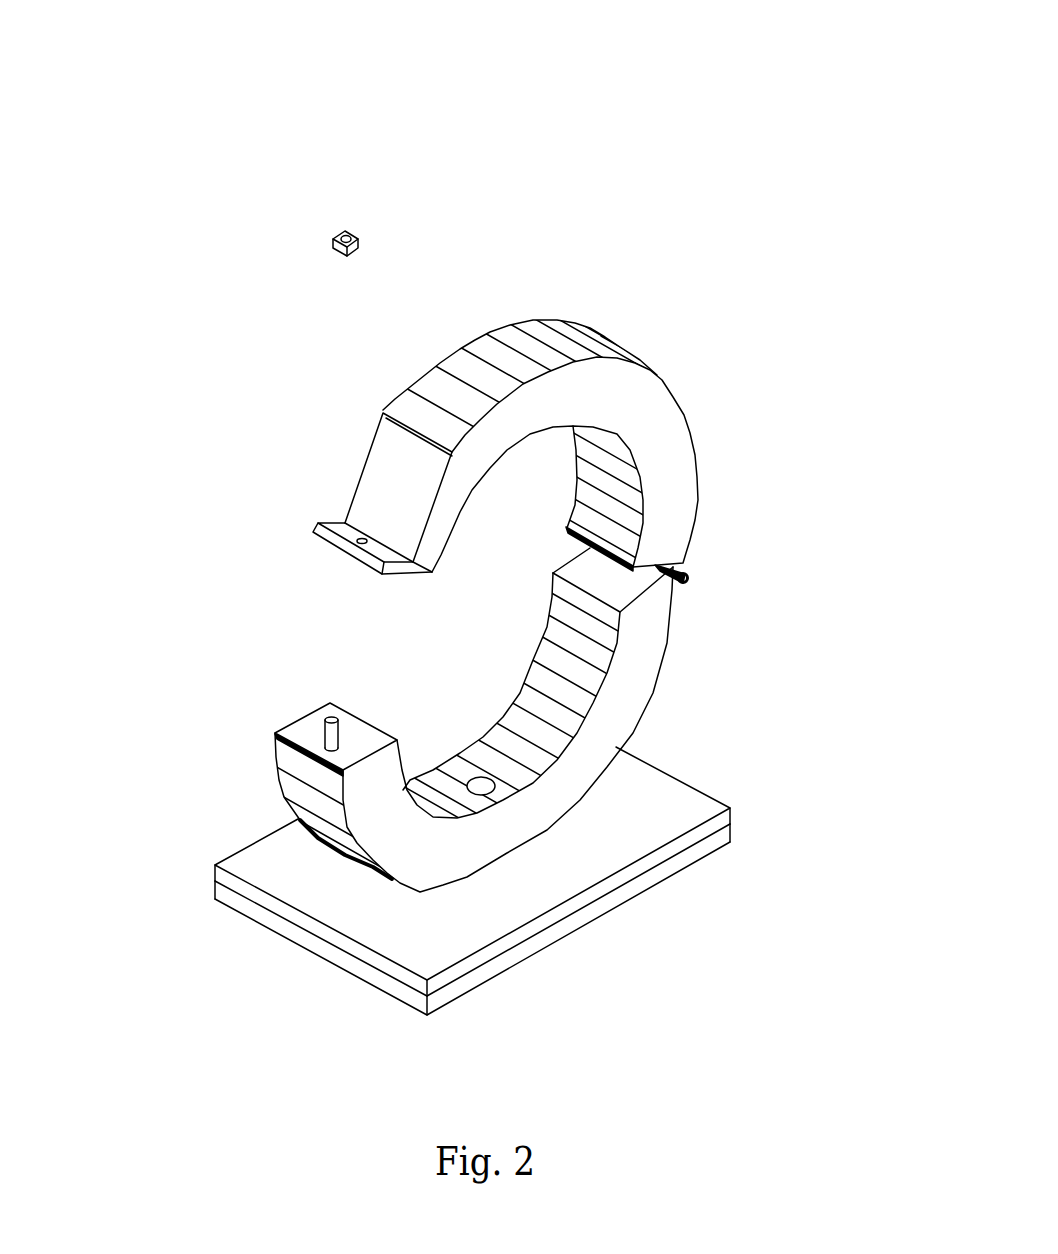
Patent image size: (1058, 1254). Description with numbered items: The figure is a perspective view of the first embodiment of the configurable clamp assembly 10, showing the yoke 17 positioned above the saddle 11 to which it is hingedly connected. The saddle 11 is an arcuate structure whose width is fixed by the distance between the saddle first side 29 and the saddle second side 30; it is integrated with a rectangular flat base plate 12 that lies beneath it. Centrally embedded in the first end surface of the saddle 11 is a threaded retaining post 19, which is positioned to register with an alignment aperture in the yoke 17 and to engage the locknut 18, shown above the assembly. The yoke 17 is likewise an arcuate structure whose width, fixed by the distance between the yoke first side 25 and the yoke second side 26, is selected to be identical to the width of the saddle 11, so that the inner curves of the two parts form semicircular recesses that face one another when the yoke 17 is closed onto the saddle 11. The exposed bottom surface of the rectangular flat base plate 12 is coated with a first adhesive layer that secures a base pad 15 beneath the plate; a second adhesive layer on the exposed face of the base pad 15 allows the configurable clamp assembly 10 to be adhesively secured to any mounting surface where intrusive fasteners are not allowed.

The configurable clamp assembly 10 is at (538, 521).
The saddle 11 is at (327, 813).
The rectangular flat base plate 12 is at (355, 915).
The base pad 15 is at (558, 937).
The yoke 17 is at (407, 482).
The locknut 18 is at (330, 238).
The threaded retaining post 19 is at (323, 728).
The yoke first side 25 is at (447, 352).
The yoke second side 26 is at (633, 398).
The saddle first side 29 is at (543, 635).
The saddle second side 30 is at (635, 662).